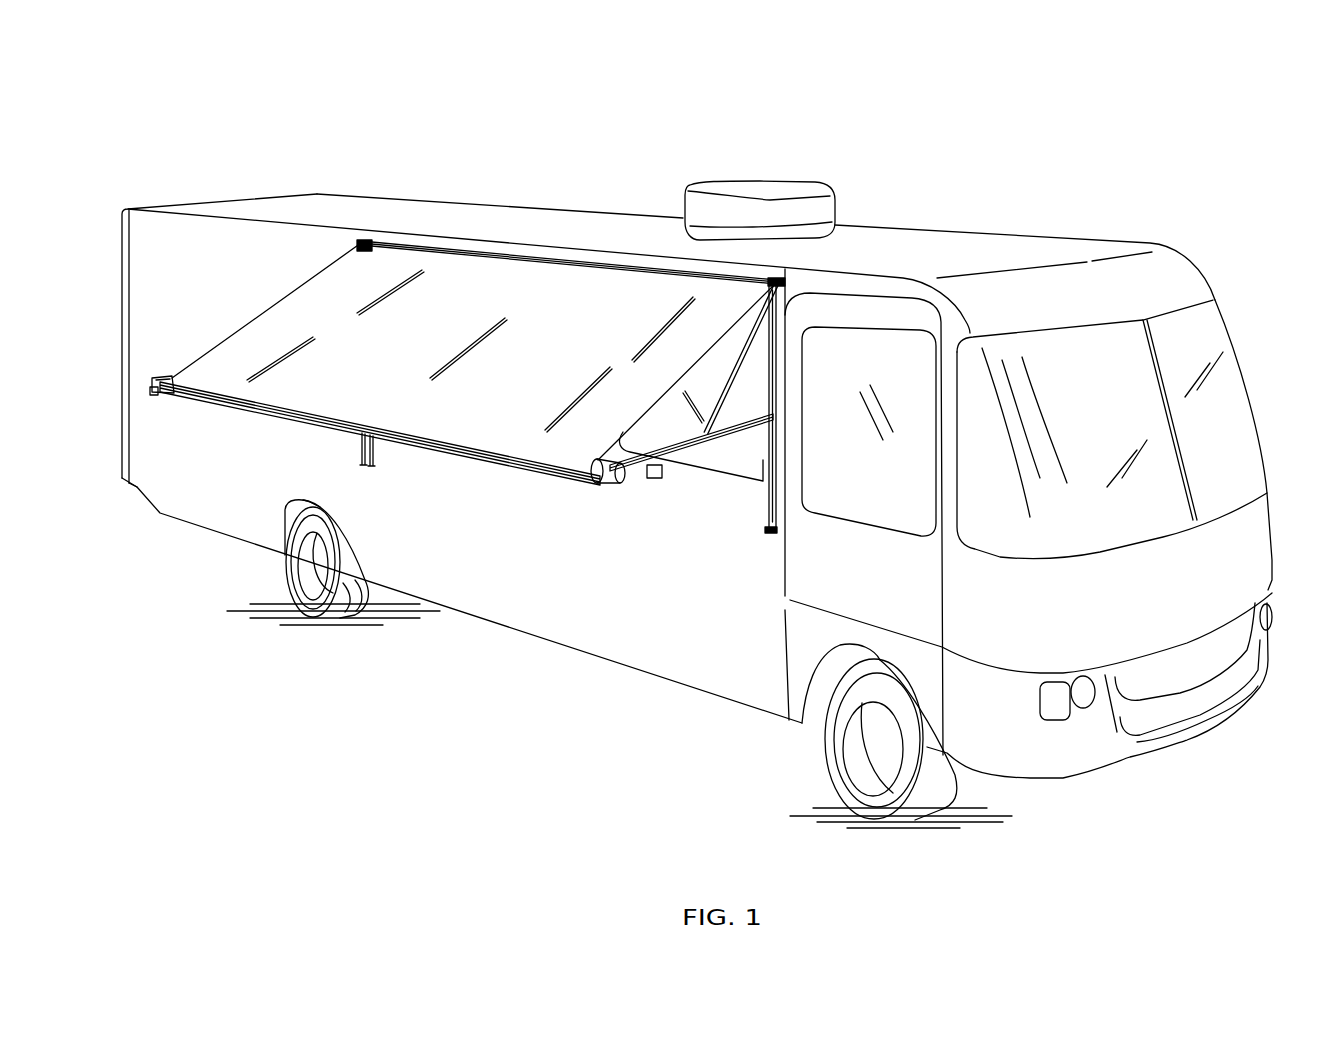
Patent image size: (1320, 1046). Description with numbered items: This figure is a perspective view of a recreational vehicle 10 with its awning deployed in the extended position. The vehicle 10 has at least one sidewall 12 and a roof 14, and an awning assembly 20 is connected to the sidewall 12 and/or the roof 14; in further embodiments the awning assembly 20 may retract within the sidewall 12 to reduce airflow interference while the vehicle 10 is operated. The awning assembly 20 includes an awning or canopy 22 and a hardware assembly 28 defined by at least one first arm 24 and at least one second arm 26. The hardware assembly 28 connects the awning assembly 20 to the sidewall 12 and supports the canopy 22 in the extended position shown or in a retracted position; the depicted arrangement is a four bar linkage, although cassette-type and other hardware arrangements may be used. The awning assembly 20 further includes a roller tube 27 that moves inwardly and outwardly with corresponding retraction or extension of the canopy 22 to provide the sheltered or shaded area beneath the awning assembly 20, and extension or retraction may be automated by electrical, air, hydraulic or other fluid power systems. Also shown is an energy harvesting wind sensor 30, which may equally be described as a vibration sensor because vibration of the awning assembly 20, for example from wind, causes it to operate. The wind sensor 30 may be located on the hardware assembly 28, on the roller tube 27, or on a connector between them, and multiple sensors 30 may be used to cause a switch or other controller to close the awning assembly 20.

The recreational vehicle 10 is at (1115, 162).
The sidewall 12 is at (750, 534).
The roof 14 is at (917, 247).
The awning assembly 20 is at (205, 333).
The canopy 22 is at (482, 303).
The first arm 24 is at (358, 243).
The second arm 26 is at (733, 390).
The roller tube 27 is at (178, 394).
The hardware assembly 28 is at (680, 480).
The energy harvesting wind sensor 30 is at (152, 389).